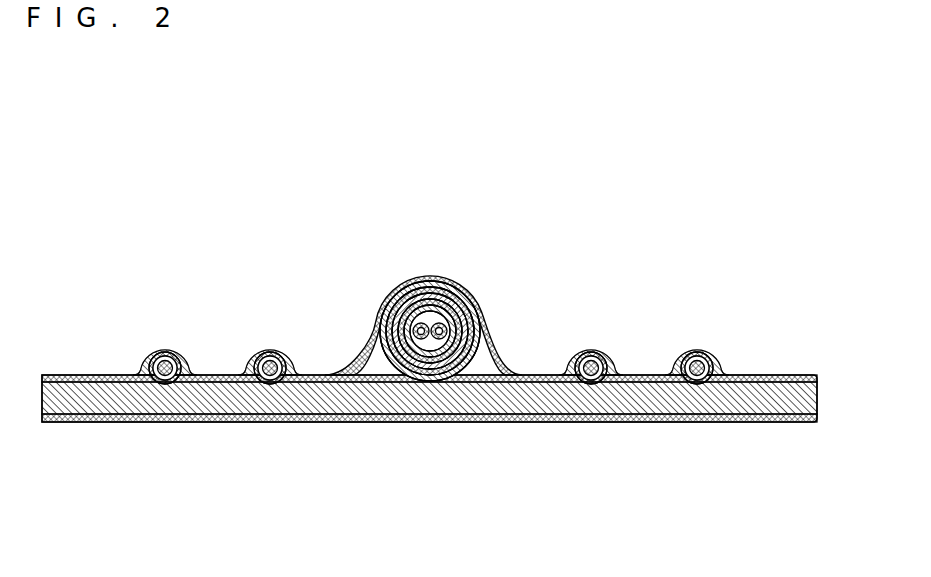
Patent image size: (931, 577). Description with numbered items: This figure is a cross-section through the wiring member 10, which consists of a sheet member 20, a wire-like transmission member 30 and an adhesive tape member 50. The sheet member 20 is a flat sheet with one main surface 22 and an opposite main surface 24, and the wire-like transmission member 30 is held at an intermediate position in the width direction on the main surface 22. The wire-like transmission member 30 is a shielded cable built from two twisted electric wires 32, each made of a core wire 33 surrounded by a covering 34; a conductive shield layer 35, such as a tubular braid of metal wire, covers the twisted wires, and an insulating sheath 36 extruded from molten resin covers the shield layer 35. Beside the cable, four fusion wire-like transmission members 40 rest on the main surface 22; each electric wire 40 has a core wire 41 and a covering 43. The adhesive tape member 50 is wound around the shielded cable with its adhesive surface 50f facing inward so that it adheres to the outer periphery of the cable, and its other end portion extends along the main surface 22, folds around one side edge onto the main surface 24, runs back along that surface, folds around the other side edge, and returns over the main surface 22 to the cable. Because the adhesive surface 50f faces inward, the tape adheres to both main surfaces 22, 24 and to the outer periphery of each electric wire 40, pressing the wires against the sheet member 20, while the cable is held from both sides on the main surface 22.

The wiring member 10 is at (812, 331).
The sheet member 20 is at (776, 423).
The main surface 22 is at (746, 375).
The main surface 24 is at (728, 419).
The wire-like transmission member 30 is at (381, 422).
The electric wire 32 is at (447, 220).
The core wire 33 is at (404, 282).
The covering 34 is at (428, 282).
The shield layer 35 is at (467, 292).
The sheath 36 is at (484, 331).
The fusion wire-like transmission member 40 is at (202, 279).
The core wire 41 is at (157, 352).
The covering 43 is at (180, 346).
The adhesive tape member 50 is at (379, 316).
The adhesive surface 50f is at (459, 422).